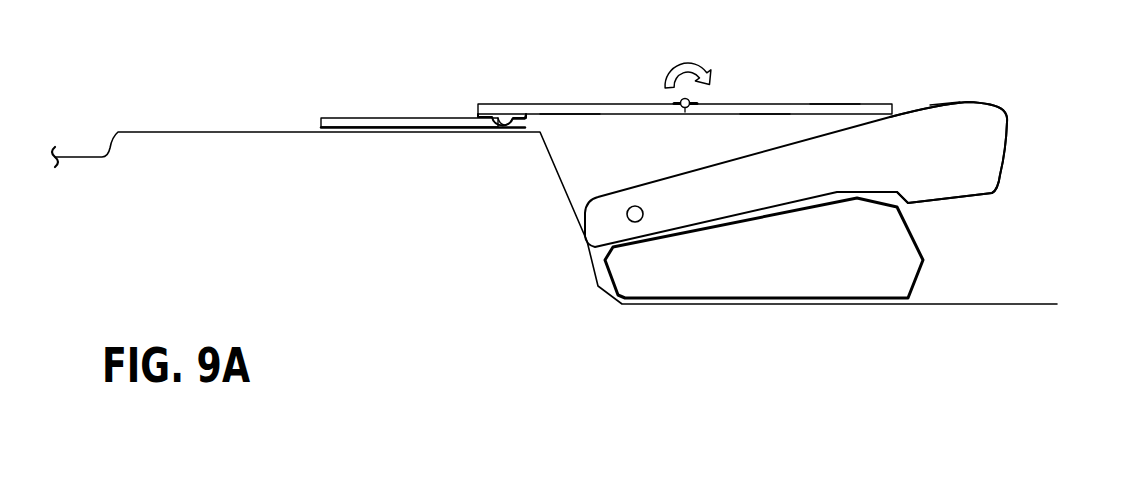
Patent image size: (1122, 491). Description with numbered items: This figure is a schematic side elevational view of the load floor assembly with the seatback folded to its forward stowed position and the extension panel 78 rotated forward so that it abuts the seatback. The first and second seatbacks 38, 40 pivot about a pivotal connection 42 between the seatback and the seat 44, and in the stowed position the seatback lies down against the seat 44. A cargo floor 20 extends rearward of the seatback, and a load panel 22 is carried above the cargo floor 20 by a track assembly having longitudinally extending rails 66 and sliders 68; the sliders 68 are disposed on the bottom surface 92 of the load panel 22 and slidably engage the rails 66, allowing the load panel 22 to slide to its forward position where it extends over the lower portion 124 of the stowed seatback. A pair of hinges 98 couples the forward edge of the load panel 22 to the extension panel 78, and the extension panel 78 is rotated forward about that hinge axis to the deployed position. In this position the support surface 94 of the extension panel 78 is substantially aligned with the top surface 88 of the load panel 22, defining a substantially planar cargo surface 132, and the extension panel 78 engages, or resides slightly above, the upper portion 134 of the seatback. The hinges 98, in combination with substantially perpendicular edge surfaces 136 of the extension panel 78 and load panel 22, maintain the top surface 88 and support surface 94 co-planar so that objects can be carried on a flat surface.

The cargo floor 20 is at (233, 132).
The load panel 22 is at (685, 77).
The first seatback 38 is at (994, 152).
The second seatback 40 is at (958, 165).
The pivotal connection 42 is at (626, 215).
The seat 44 is at (762, 270).
The longitudinally extending rails 66 is at (376, 126).
The sliders 68 is at (501, 130).
The extension panel 78 is at (765, 114).
The top surface of the load panel 88 is at (485, 84).
The bottom surface of the load panel 92 is at (570, 113).
The support surface 94 is at (833, 104).
The hinges 98 is at (679, 101).
The lower portion of the seatback 124 is at (623, 185).
The planar cargo surface 132 is at (728, 90).
The upper portion of the seatback 134 is at (921, 94).
The perpendicular edge surfaces 136 is at (685, 108).